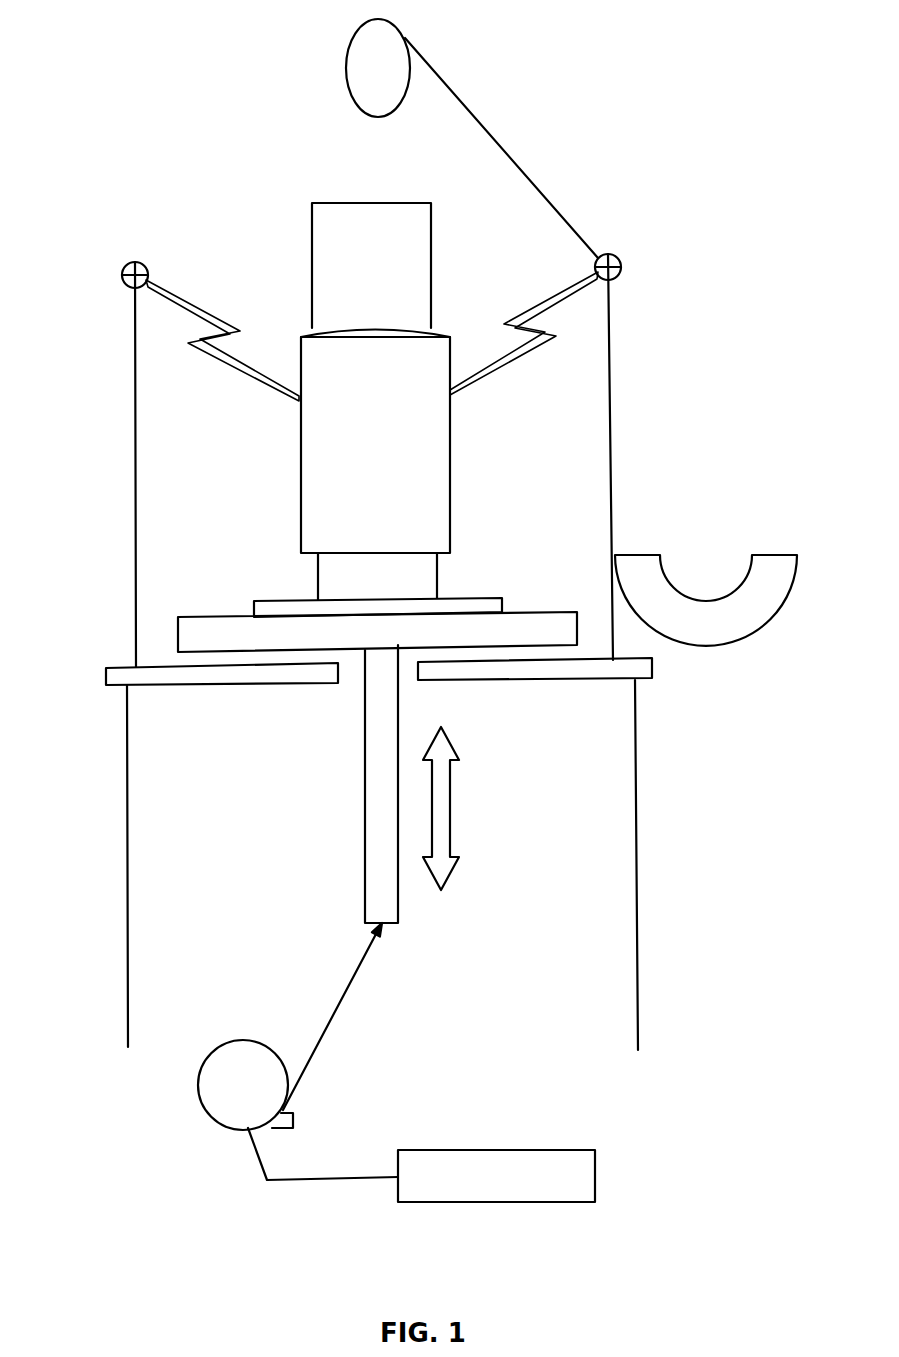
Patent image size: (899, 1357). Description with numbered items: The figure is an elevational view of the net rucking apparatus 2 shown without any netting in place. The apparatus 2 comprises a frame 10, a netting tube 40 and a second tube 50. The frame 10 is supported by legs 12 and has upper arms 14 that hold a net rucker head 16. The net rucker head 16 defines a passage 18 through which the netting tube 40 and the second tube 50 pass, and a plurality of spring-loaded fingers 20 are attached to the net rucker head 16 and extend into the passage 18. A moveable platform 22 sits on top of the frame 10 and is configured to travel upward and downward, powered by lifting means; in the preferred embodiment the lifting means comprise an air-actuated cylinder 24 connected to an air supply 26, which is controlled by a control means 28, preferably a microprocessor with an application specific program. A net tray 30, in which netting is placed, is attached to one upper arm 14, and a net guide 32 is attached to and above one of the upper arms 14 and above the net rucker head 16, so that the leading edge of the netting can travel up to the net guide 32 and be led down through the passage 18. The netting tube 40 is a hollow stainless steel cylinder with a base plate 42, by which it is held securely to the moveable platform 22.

The net rucking apparatus 2 is at (715, 795).
The frame 10 is at (107, 672).
The legs 12 is at (108, 918).
The upper arms 14 is at (110, 400).
The net rucker head 16 is at (122, 270).
The passage 18 is at (266, 354).
The spring-loaded fingers 20 is at (207, 348).
The moveable platform 22 is at (197, 623).
The air-actuated cylinder 24 is at (372, 813).
The air supply 26 is at (226, 1100).
The control means 28 is at (498, 1157).
The net tray 30 is at (636, 565).
The net guide 32 is at (403, 38).
The netting tube 40 is at (318, 238).
The base plate 42 is at (478, 605).
The second tube 50 is at (312, 472).